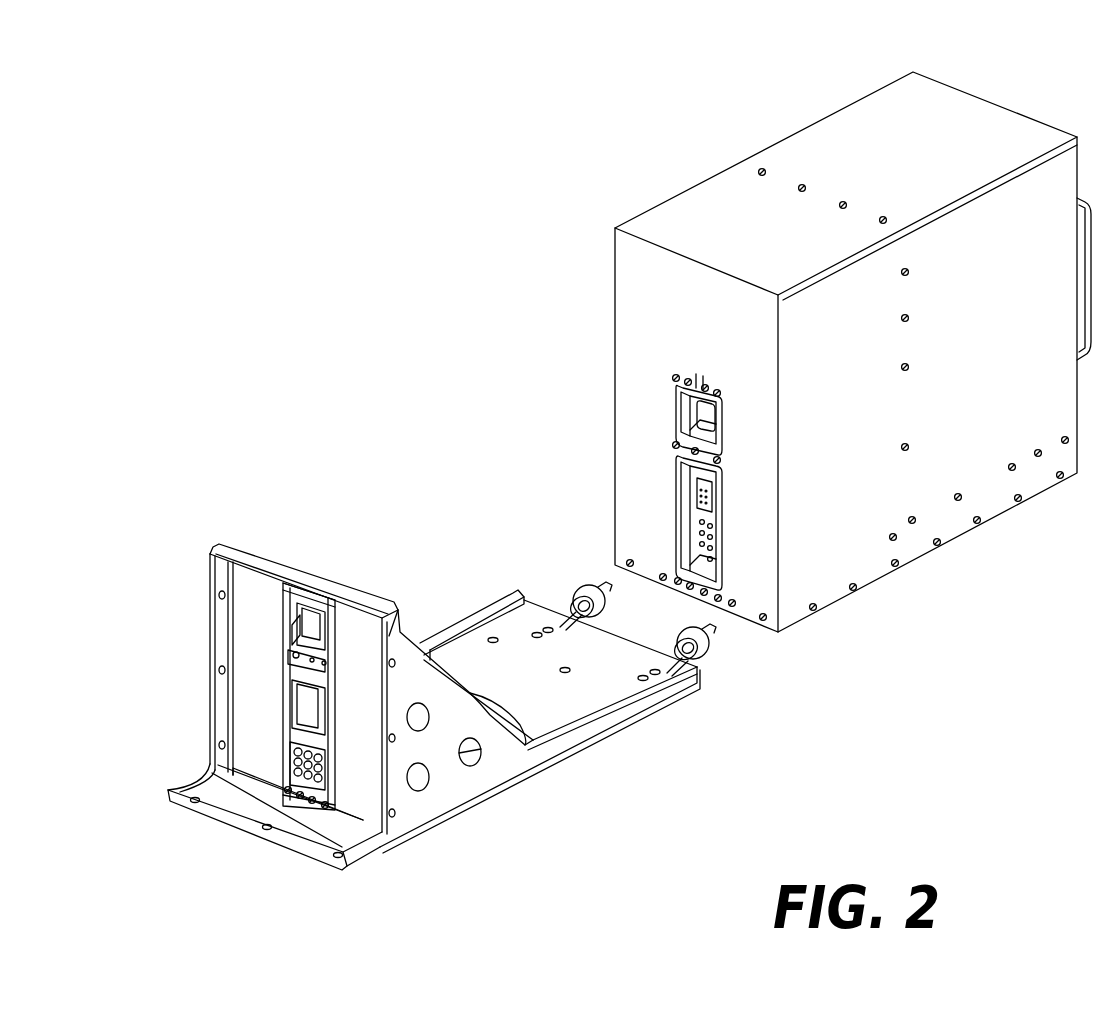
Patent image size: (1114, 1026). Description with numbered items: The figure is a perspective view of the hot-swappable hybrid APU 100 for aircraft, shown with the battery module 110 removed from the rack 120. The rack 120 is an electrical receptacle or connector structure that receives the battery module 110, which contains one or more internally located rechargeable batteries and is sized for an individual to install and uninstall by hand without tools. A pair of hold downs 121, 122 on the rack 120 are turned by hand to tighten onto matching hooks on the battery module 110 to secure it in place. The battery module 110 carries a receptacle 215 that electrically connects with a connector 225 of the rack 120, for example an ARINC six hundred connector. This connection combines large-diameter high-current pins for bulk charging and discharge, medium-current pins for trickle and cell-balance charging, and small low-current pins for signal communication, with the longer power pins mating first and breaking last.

The hybrid APU 100 is at (298, 72).
The battery module 110 is at (885, 87).
The rack 120 is at (232, 545).
The hold down 121 is at (710, 652).
The hold down 122 is at (573, 590).
The receptacle 215 is at (673, 517).
The connector 225 is at (330, 750).